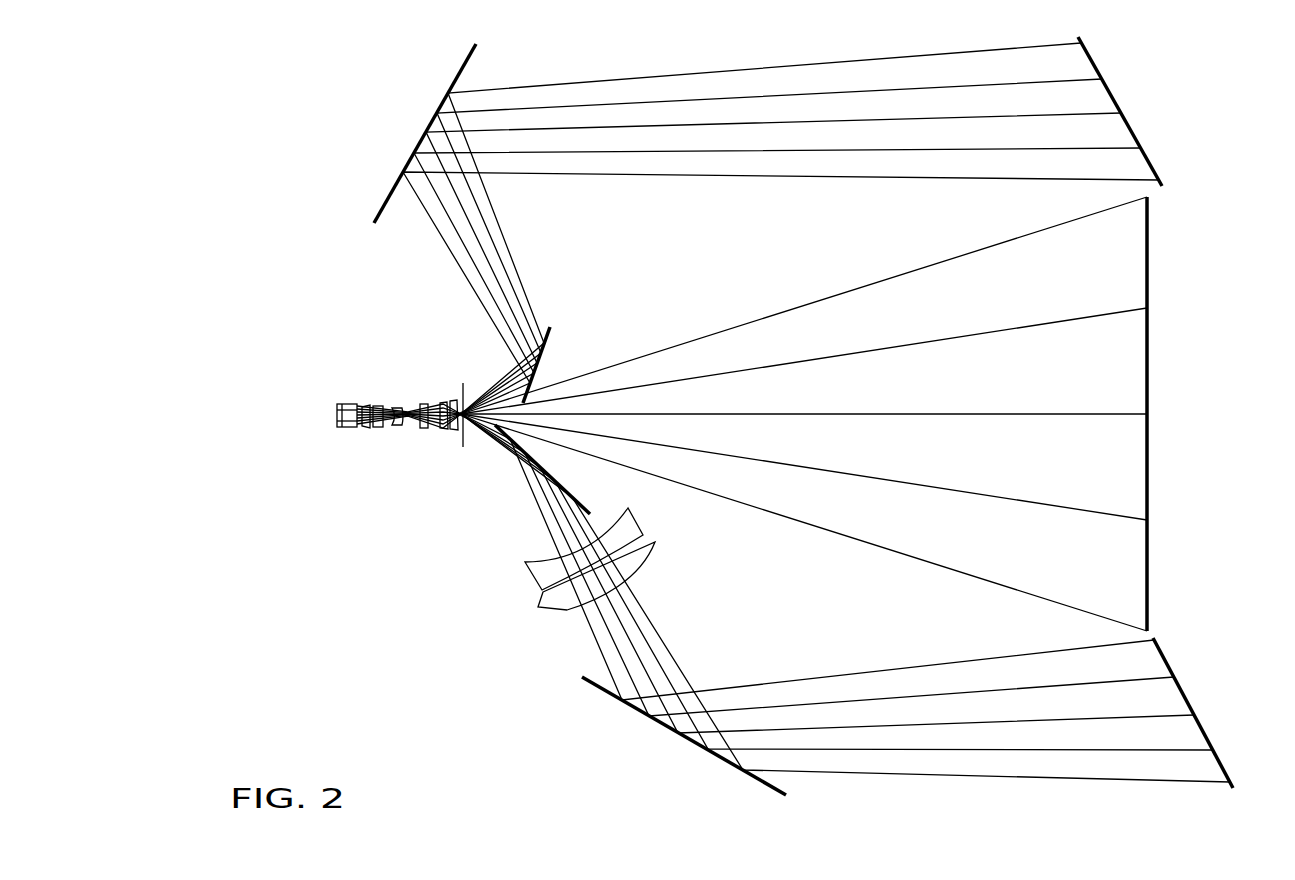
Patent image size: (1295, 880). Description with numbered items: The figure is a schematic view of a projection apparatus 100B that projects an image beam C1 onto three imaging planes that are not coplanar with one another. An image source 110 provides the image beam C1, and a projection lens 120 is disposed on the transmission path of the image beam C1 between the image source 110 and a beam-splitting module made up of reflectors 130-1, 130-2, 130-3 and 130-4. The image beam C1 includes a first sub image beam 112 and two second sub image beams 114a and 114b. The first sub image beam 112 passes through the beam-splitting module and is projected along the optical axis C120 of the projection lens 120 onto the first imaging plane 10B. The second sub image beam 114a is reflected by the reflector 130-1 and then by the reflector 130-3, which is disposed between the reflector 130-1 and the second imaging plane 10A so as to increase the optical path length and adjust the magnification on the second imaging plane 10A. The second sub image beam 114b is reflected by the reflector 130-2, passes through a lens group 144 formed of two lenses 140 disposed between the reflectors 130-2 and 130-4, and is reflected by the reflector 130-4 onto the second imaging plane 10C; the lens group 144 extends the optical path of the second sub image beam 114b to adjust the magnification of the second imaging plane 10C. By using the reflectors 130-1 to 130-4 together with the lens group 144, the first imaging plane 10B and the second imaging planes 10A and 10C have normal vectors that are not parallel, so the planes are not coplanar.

The projection apparatus 100B is at (280, 107).
The image source 110 is at (344, 440).
The projection lens 120 is at (379, 440).
The image beam C1 is at (410, 426).
The optical axis of the projection lens C120 is at (455, 402).
The reflector 130-1 is at (552, 333).
The reflector 130-2 is at (553, 484).
The reflector 130-3 is at (392, 187).
The reflector 130-4 is at (583, 690).
The first sub image beam 112 is at (943, 412).
The second sub image beam 114a is at (581, 81).
The second sub image beam 114b is at (943, 787).
The lens 140 is at (645, 523).
The lens group 144 is at (736, 522).
The second imaging plane 10A is at (1143, 108).
The first imaging plane 10B is at (1158, 427).
The second imaging plane 10C is at (1205, 700).